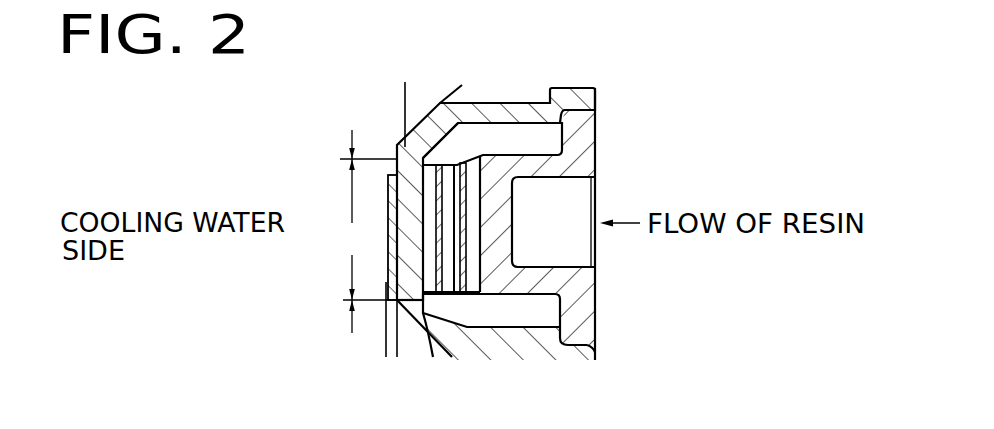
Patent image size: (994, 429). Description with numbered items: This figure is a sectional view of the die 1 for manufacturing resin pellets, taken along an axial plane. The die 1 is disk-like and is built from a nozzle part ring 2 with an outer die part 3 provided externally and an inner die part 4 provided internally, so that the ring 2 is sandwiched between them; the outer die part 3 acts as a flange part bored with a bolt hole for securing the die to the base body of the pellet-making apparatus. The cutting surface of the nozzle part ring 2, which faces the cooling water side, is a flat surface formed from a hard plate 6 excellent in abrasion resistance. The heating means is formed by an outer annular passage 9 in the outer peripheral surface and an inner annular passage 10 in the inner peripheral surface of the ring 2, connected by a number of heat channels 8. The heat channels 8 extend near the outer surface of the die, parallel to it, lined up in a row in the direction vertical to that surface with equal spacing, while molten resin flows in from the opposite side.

The die 1 is at (606, 121).
The nozzle part ring 2 is at (350, 229).
The outer die part 3 is at (368, 130).
The inner die part 4 is at (371, 329).
The hard plate 6 is at (387, 191).
The heat channels 8 is at (427, 262).
The outer annular passage 9 is at (490, 152).
The inner annular passage 10 is at (480, 320).